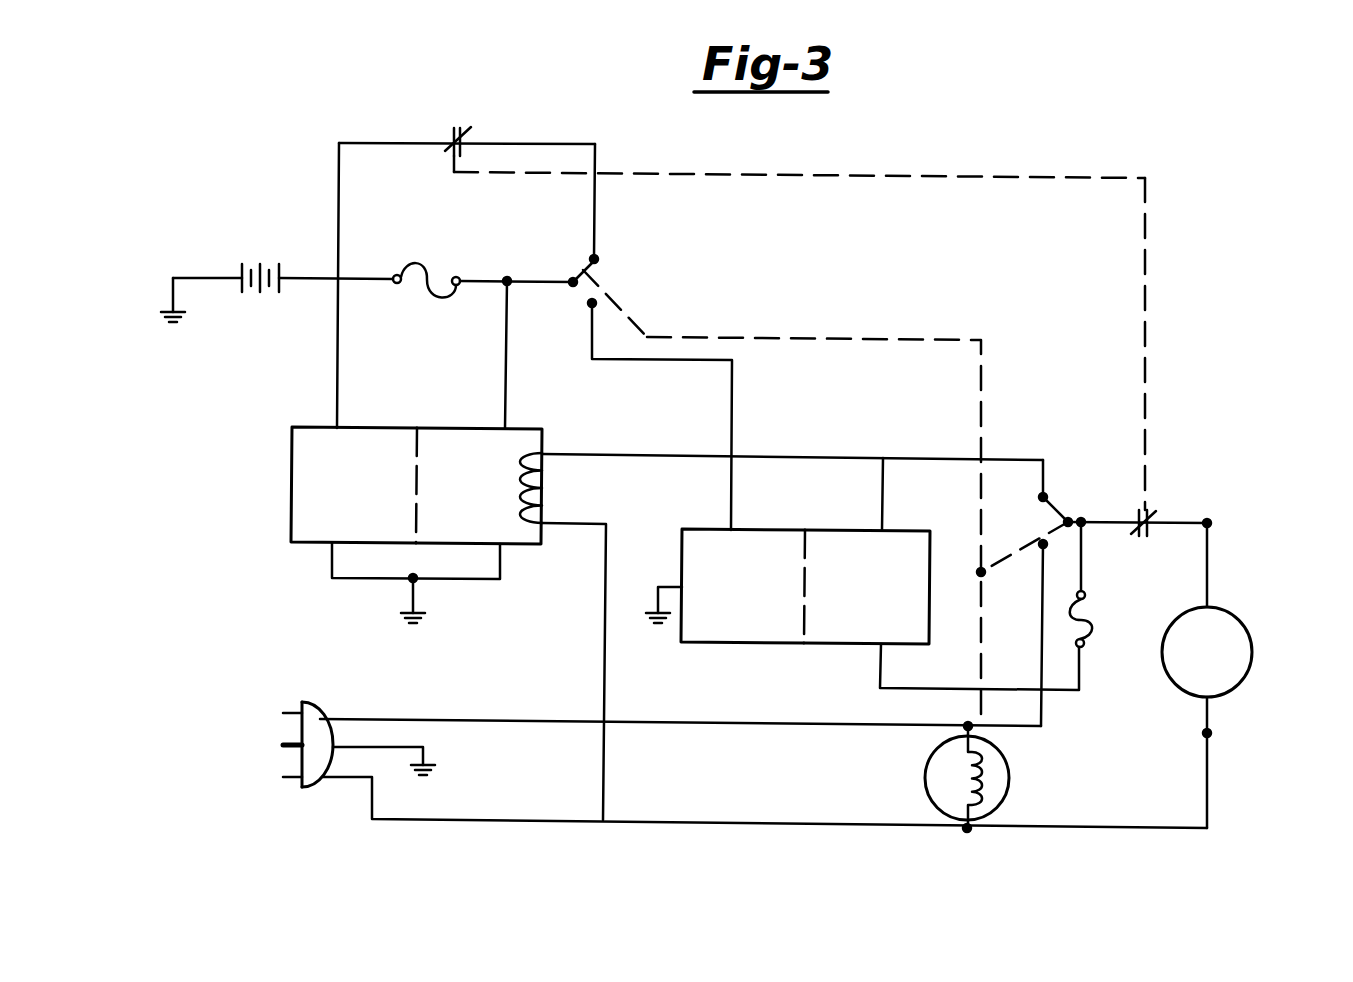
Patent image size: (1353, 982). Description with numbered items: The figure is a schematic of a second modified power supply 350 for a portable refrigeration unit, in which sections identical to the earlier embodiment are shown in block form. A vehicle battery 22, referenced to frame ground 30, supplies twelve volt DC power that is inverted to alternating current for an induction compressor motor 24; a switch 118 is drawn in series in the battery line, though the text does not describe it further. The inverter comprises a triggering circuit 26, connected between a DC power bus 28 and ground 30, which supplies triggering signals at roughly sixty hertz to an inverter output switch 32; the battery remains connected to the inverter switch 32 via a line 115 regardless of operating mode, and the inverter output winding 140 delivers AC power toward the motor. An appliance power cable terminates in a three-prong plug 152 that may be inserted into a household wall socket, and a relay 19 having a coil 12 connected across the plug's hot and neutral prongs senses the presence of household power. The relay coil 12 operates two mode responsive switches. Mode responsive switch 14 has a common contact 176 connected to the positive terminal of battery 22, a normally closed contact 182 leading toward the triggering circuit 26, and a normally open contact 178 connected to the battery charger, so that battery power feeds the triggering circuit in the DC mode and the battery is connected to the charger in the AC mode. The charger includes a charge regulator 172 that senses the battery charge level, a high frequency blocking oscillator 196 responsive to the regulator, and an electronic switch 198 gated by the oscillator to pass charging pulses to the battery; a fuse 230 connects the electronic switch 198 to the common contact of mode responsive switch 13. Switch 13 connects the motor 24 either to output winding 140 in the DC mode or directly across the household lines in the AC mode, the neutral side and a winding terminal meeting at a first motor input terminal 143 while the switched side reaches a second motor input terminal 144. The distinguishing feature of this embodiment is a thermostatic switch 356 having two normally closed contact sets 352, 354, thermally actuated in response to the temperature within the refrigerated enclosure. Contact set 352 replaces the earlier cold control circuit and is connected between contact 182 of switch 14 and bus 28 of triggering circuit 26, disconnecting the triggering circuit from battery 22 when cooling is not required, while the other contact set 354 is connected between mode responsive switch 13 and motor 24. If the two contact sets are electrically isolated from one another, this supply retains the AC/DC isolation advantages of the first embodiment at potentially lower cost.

The contact set 352 is at (515, 108).
The power supply 350 is at (902, 151).
The thermostatic switch 356 is at (1041, 177).
The battery 22 is at (300, 210).
The frame ground 30 is at (173, 290).
The switch 118 is at (476, 230).
The mode responsive switch 14 is at (607, 270).
The common contact 176 is at (592, 271).
The normally closed contact 182 is at (598, 256).
The normally open contact 178 is at (605, 302).
The DC power bus 28 is at (338, 362).
The line 115 is at (506, 353).
The triggering circuit 26 is at (377, 503).
The inverter output switch 32 is at (489, 504).
The output winding 140 is at (532, 496).
The charge regulator 172 is at (743, 586).
The blocking oscillator 196 is at (743, 586).
The electronic switch 198 is at (867, 587).
The mode responsive switch 13 is at (1113, 430).
The contact set 354 is at (1158, 500).
The second motor input terminal 144 is at (1207, 523).
The fuse 230 is at (1088, 604).
The compressor motor 24 is at (1163, 670).
The first motor input terminal 143 is at (1207, 733).
The three-prong plug 152 is at (318, 716).
The relay 19 is at (938, 777).
The relay coil 12 is at (982, 783).